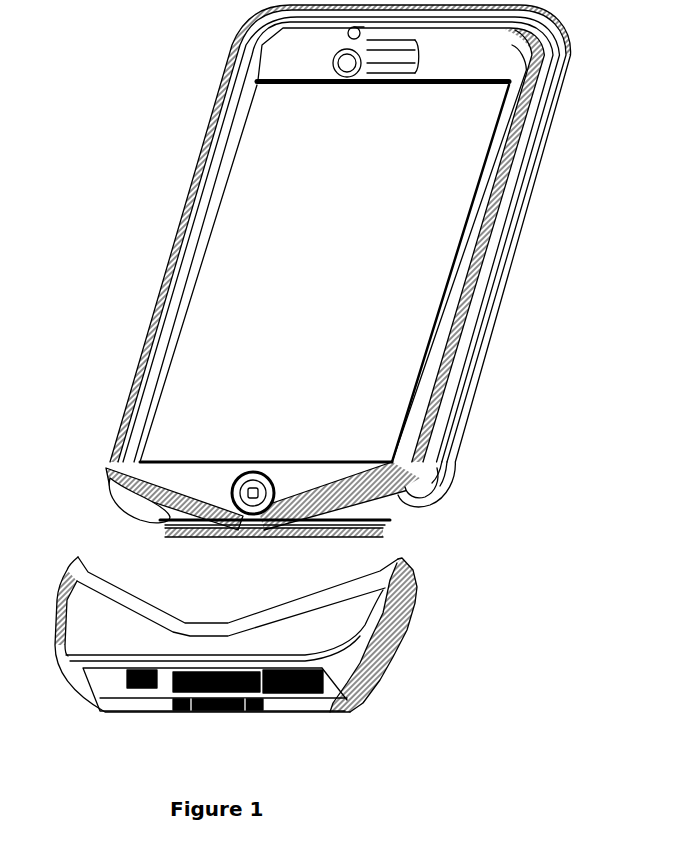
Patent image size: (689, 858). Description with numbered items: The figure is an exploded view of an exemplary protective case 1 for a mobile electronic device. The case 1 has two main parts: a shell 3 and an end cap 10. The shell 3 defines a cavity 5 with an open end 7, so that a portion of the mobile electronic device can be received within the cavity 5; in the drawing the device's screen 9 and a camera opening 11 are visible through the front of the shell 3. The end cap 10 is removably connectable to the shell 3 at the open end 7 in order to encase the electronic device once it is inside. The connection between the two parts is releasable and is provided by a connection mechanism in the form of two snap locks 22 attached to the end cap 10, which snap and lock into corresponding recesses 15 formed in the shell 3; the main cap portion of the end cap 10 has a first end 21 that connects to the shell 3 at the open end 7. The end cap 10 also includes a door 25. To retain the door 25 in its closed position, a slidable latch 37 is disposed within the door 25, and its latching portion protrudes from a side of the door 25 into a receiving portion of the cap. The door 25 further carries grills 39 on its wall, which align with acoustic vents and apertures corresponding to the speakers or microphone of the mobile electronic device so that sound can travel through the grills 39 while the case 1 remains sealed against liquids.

The protective case 1 is at (129, 87).
The shell 3 is at (563, 57).
The cavity 5 is at (398, 498).
The open end 7 is at (106, 511).
The mobile device screen 9 is at (346, 194).
The end cap 10 is at (103, 630).
The camera opening 11 is at (345, 60).
The recesses 15 is at (440, 458).
The first end 21 is at (153, 605).
The snap locks 22 is at (63, 587).
The door 25 is at (119, 692).
The latch 37 is at (214, 690).
The grills 39 is at (134, 690).